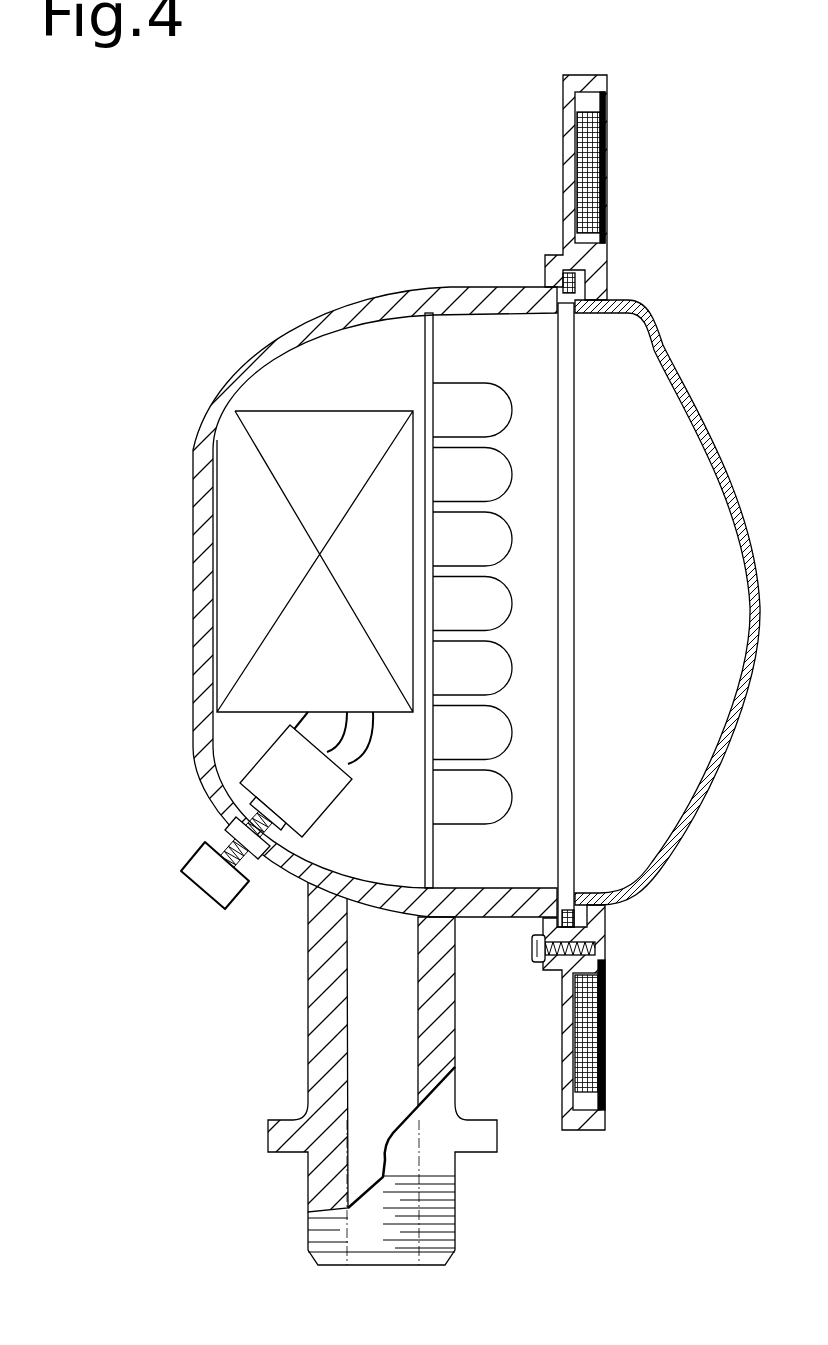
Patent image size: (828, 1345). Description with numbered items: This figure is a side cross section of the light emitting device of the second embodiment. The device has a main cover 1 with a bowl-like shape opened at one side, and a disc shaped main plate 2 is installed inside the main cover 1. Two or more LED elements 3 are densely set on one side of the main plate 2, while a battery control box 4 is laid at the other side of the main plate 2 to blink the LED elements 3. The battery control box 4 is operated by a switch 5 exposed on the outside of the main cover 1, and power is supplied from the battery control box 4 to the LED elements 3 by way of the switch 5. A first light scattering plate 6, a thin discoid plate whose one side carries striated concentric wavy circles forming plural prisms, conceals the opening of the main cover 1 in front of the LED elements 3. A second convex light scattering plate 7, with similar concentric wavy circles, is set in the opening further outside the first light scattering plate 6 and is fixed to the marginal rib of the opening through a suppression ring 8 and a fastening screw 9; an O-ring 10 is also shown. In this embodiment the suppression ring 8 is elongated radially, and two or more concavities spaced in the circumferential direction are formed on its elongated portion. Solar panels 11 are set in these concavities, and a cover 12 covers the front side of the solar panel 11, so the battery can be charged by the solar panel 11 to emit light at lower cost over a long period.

The main cover 1 is at (448, 287).
The main plate 2 is at (428, 357).
The LED elements 3 is at (493, 412).
The battery control box 4 is at (243, 492).
The switch 5 is at (208, 883).
The first light scattering plate 6 is at (576, 773).
The second light scattering plate 7 is at (652, 312).
The suppression ring 8 is at (607, 263).
The fastening screw 9 is at (555, 970).
The O-ring 10 is at (577, 913).
The solar panel 11 is at (580, 148).
The cover 12 is at (606, 135).